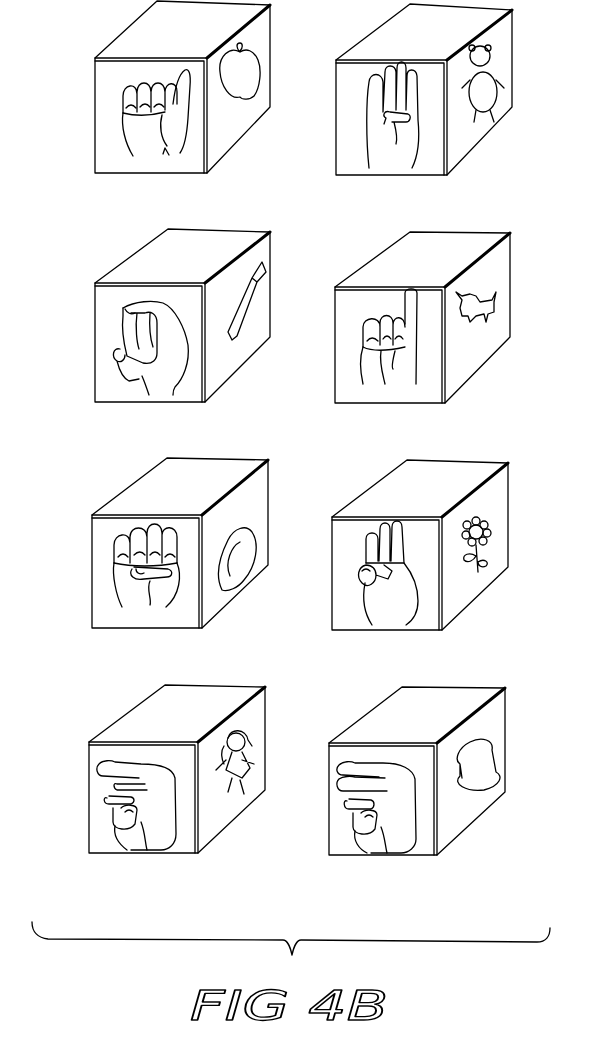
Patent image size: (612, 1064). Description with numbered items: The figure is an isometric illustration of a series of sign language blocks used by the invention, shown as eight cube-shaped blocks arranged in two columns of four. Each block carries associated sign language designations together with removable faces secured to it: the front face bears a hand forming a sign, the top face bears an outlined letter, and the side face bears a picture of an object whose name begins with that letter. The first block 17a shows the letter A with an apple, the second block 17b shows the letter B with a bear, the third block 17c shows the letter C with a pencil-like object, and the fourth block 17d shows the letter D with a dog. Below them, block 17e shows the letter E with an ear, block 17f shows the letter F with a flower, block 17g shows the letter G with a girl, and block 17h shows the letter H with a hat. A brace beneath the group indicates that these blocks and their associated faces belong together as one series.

The sign language block 17a is at (108, 164).
The sign language block 17b is at (350, 164).
The sign language block 17c is at (107, 388).
The sign language block 17d is at (348, 390).
The sign language block 17e is at (102, 616).
The sign language block 17f is at (342, 622).
The sign language block 17g is at (100, 843).
The sign language block 17h is at (340, 842).